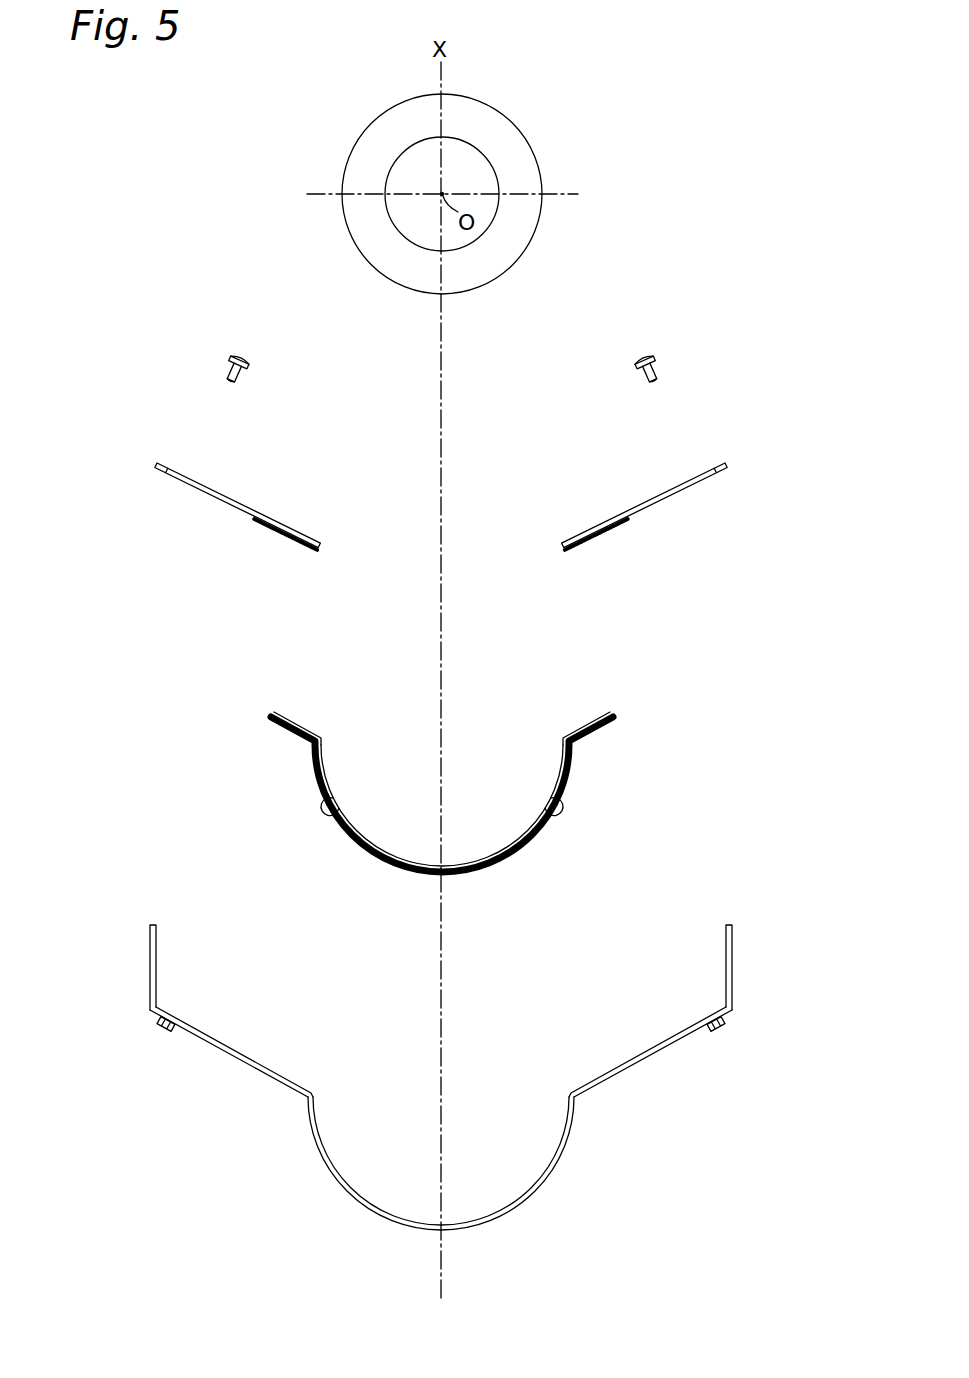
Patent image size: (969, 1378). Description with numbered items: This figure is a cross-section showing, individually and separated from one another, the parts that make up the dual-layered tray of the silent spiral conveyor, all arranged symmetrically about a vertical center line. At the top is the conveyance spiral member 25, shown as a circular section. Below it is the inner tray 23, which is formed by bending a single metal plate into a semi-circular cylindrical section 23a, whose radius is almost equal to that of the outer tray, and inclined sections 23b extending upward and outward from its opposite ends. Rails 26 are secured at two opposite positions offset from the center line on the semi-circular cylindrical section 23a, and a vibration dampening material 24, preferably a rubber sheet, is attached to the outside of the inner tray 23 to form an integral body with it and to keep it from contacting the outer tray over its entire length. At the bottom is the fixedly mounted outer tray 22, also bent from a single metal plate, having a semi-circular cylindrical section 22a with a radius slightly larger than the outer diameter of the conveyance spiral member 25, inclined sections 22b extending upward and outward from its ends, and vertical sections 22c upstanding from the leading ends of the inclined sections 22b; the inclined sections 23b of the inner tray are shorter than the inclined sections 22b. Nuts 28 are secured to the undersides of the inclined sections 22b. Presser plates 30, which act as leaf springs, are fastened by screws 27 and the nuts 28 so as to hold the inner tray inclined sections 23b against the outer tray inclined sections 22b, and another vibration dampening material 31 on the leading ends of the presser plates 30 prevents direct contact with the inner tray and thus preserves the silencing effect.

The outer tray 22 is at (442, 1107).
The semi-circular cylindrical section 22a is at (520, 1205).
The inclined sections 22b is at (233, 1046).
The vertical sections 22c is at (157, 947).
The inner tray 23 is at (409, 763).
The semi-circular cylindrical section 23a is at (380, 845).
The inclined sections 23b is at (302, 724).
The vibration dampening material 24 is at (530, 855).
The conveyance spiral member 25 is at (342, 102).
The rails 26 is at (346, 791).
The screw 27 is at (232, 350).
The nut 28 is at (168, 1035).
The presser plates 30 is at (443, 496).
The vibration dampening material 31 is at (285, 534).